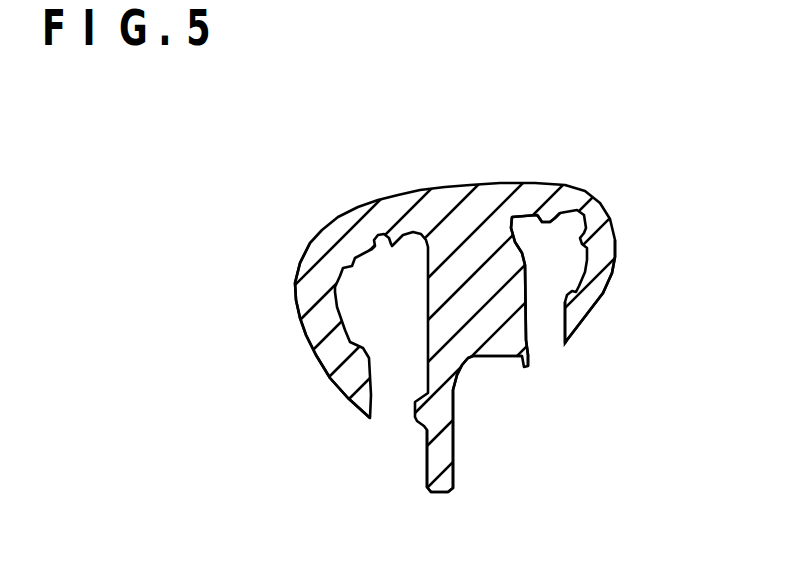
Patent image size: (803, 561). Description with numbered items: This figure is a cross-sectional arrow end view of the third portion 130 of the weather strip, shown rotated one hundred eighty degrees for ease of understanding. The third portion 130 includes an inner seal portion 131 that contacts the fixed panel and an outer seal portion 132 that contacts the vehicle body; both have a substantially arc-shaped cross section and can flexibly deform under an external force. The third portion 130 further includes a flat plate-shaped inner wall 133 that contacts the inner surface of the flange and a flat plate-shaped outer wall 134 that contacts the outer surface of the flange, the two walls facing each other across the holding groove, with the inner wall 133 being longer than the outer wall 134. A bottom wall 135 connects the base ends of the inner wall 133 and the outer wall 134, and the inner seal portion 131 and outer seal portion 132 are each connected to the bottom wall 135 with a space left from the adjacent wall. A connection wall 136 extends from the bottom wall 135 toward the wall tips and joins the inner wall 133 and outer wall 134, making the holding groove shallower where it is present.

The third portion 130 is at (657, 152).
The inner seal portion 131 is at (616, 265).
The outer seal portion 132 is at (300, 293).
The inner wall 133 is at (530, 318).
The outer wall 134 is at (423, 462).
The bottom wall 135 is at (515, 225).
The connection wall 136 is at (492, 357).